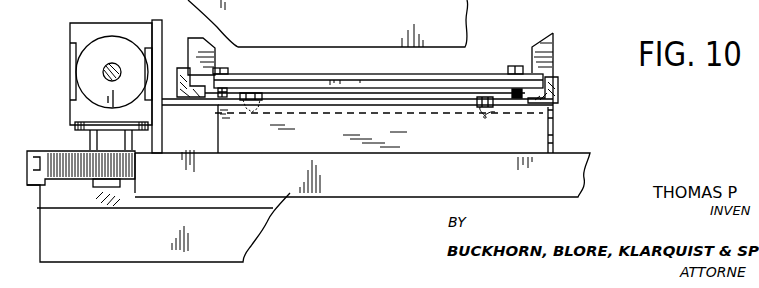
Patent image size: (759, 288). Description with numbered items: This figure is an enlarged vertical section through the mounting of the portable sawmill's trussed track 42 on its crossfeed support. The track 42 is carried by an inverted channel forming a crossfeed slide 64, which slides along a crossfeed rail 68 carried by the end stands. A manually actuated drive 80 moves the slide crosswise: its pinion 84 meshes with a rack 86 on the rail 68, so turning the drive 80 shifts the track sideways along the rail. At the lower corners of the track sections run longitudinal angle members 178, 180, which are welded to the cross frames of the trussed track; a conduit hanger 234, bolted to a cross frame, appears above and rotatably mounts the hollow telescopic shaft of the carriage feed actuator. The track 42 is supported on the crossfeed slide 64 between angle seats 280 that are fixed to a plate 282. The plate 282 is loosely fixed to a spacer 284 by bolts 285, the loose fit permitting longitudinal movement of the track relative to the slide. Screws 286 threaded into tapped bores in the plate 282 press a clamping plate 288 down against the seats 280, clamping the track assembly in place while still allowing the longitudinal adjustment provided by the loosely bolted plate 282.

The track 42 is at (555, 59).
The inverted channel 64 is at (580, 158).
The crossfeed rail 68 is at (248, 228).
The manually actuated drive 80 is at (140, 22).
The pinion 84 is at (112, 190).
The rack 86 is at (63, 163).
The longitudinal angle member 178 is at (202, 108).
The longitudinal angle member 180 is at (547, 94).
The conduit hanger 234 is at (305, 0).
The angle seat 280 is at (181, 97).
The plate 282 is at (427, 107).
The spacer 284 is at (554, 143).
The bolt 285 is at (262, 95).
The screw 286 is at (227, 72).
The clamping plate 288 is at (325, 78).